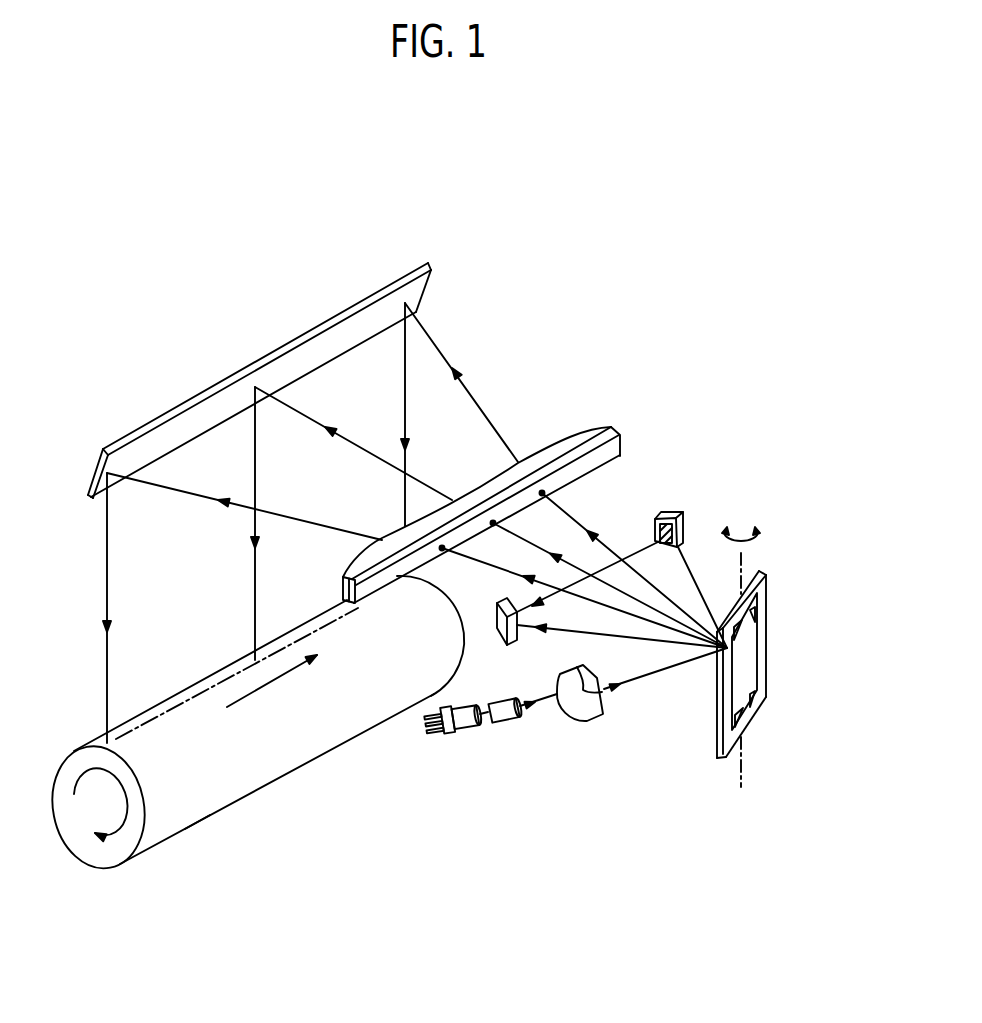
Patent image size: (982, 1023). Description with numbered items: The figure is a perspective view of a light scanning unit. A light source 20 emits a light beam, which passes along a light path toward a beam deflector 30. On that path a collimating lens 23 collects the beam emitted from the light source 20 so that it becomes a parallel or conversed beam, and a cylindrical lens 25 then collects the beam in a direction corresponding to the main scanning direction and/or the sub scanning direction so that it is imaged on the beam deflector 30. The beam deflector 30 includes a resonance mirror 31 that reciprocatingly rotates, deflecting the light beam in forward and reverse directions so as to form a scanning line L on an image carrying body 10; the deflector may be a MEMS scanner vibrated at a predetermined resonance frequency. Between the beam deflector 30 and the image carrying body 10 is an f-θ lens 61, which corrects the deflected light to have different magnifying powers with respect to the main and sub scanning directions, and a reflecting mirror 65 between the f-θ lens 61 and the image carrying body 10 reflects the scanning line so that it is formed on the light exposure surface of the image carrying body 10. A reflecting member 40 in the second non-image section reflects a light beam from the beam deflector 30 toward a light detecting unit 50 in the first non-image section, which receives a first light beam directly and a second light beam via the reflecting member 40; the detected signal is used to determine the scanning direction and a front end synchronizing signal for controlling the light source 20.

The image carrying body 10 is at (298, 763).
The scanning line L is at (198, 823).
The light source 20 is at (460, 736).
The collimating lens 23 is at (513, 721).
The cylindrical lens 25 is at (592, 719).
The beam deflector 30 is at (782, 654).
The resonance mirror 31 is at (767, 654).
The reflecting member 40 is at (672, 511).
The light detecting unit 50 is at (499, 641).
The f-θ lens 61 is at (622, 437).
The reflecting mirror 65 is at (303, 334).